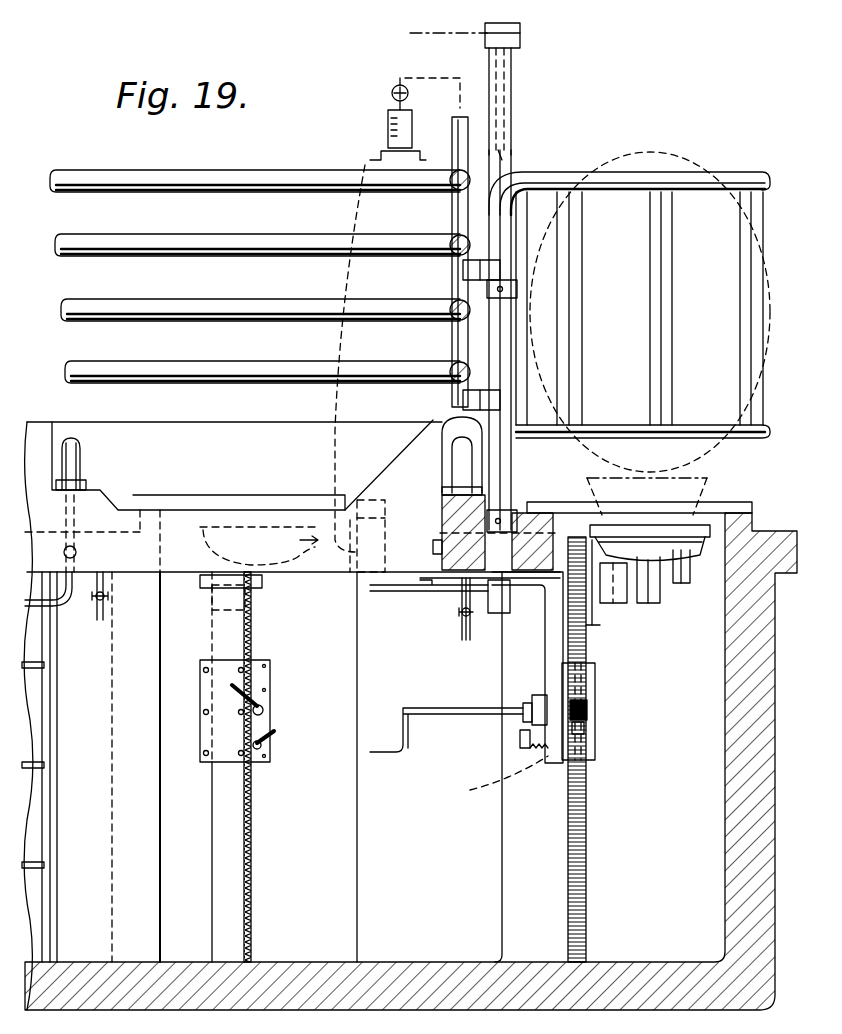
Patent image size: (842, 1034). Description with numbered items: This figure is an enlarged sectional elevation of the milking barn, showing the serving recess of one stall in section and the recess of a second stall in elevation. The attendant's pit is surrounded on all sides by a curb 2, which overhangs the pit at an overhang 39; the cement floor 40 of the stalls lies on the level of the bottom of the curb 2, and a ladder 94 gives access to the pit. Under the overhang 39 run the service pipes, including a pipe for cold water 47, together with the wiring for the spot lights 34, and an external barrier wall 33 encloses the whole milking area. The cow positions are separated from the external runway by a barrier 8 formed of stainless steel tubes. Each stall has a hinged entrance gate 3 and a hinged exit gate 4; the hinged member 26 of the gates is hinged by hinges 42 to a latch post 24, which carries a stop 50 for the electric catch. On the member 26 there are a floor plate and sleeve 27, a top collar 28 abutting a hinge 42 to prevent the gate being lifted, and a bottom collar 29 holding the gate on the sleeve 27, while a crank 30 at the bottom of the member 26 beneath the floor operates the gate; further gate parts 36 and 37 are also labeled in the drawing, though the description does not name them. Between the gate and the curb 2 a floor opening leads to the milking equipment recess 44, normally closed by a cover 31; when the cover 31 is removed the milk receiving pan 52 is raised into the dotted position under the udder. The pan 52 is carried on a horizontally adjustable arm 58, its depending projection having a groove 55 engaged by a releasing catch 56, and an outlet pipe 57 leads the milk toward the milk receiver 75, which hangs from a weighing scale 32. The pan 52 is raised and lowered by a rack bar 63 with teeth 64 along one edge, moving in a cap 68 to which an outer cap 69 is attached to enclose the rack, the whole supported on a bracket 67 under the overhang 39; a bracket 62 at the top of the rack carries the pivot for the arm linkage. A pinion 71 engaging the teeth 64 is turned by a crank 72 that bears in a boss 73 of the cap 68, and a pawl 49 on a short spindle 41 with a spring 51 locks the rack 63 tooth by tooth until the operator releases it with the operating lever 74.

The curb 2 is at (36, 432).
The entrance gate 3 is at (629, 304).
The exit gate 4 is at (733, 154).
The barrier 8 is at (277, 172).
The latch post 24 is at (452, 342).
The hinged member 26 is at (511, 118).
The floor plate and sleeve 27 is at (505, 598).
The top collar 28 is at (517, 287).
The bottom collar 29 is at (513, 510).
The crank 30 is at (440, 596).
The cover 31 is at (738, 502).
The weighing scale 32 is at (392, 93).
The external barrier wall 33 is at (82, 460).
The spot light 34 is at (440, 443).
The rod 36 is at (505, 77).
The shelf plate 37 is at (262, 492).
The overhang 39 is at (360, 560).
The cement floor 40 is at (78, 553).
The short spindle 41 is at (503, 777).
The hinge 42 is at (497, 263).
The milking equipment recess 44 is at (160, 772).
The cold water pipe 47 is at (103, 618).
The pawl 49 is at (590, 732).
The stop 50 is at (462, 33).
The spring 51 is at (532, 752).
The milk receiving pan 52 is at (760, 520).
The groove 55 is at (503, 697).
The releasing catch 56 is at (225, 760).
The outlet pipe 57 is at (684, 575).
The horizontally adjustable arm 58 is at (635, 598).
The bracket 62 is at (605, 615).
The rack bar 63 is at (232, 882).
The teeth 64 is at (375, 166).
The bracket 67 is at (550, 648).
The cap 68 is at (556, 765).
The outer cap 69 is at (595, 672).
The pinion 71 is at (590, 703).
The crank 72 is at (266, 692).
The boss 73 is at (527, 702).
The operating lever 74 is at (276, 738).
The milk receiver 75 is at (388, 128).
The ladder 94 is at (57, 740).